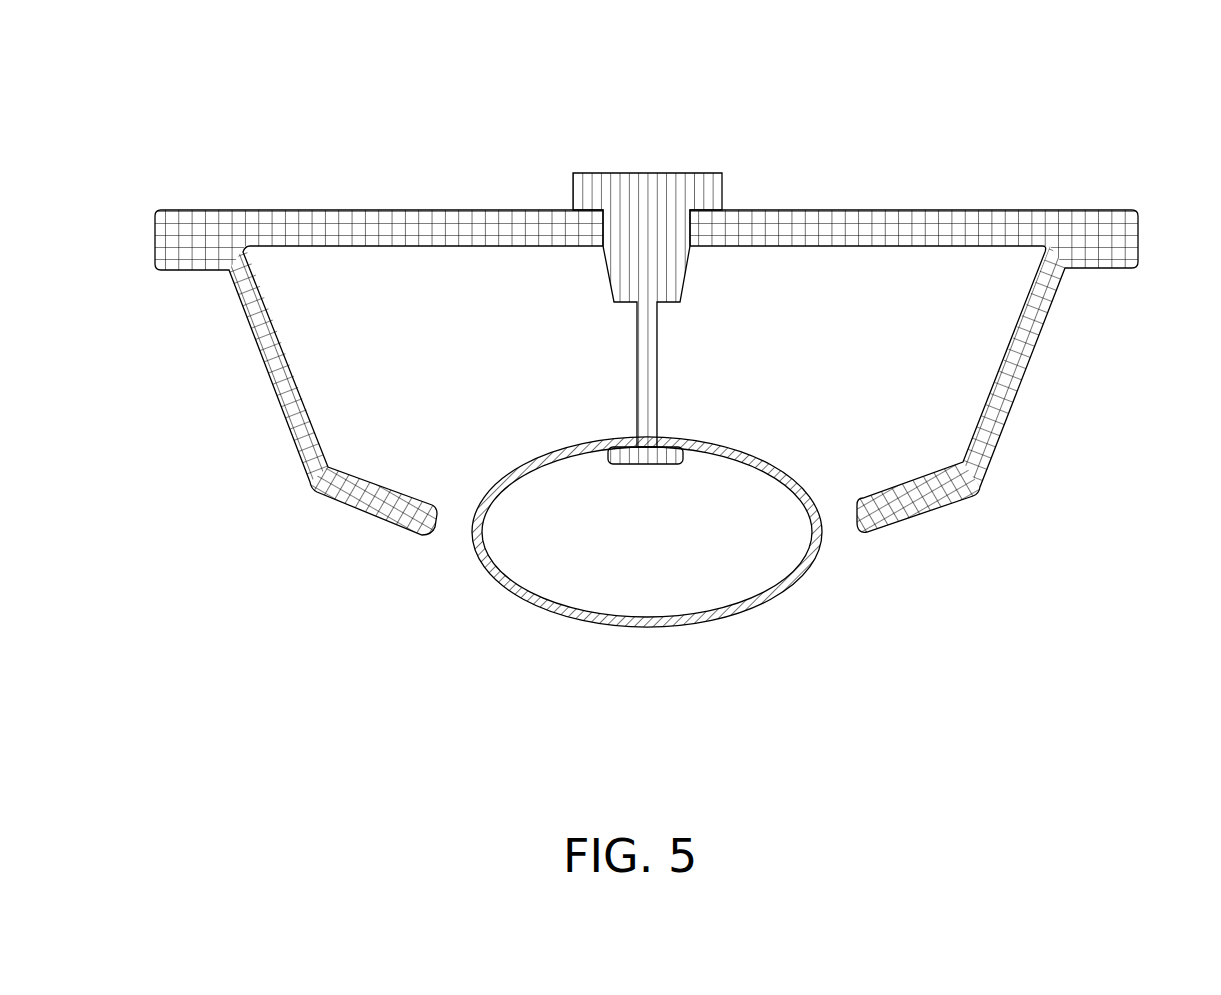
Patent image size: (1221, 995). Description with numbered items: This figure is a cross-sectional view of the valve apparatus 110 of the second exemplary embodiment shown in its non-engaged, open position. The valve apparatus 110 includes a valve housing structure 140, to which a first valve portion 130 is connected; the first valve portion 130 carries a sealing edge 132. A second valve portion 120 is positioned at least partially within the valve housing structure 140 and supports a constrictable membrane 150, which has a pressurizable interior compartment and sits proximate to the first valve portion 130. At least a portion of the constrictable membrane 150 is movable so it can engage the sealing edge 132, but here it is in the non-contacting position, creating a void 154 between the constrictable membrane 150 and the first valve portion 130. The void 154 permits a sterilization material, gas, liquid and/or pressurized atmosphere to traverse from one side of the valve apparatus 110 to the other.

The valve apparatus 110 is at (878, 50).
The second valve portion 120 is at (655, 377).
The first valve portion 130 is at (390, 508).
The sealing edge 132 is at (437, 532).
The valve housing structure 140 is at (1128, 208).
The constrictable membrane 150 is at (675, 627).
The void 154 is at (840, 541).